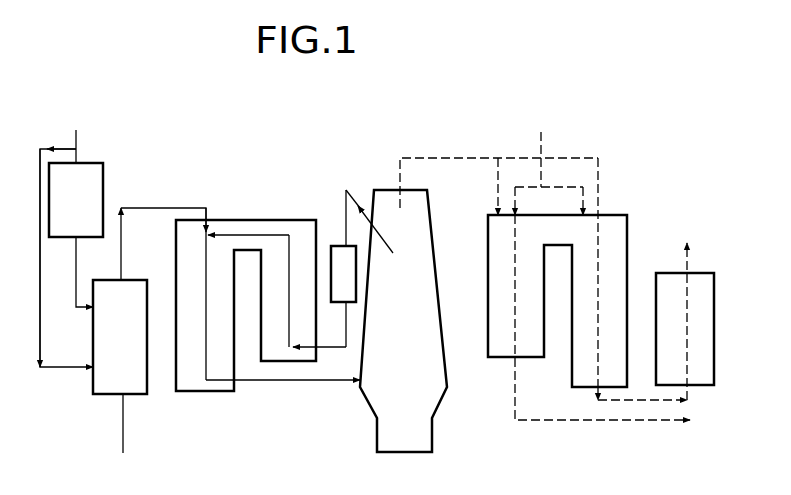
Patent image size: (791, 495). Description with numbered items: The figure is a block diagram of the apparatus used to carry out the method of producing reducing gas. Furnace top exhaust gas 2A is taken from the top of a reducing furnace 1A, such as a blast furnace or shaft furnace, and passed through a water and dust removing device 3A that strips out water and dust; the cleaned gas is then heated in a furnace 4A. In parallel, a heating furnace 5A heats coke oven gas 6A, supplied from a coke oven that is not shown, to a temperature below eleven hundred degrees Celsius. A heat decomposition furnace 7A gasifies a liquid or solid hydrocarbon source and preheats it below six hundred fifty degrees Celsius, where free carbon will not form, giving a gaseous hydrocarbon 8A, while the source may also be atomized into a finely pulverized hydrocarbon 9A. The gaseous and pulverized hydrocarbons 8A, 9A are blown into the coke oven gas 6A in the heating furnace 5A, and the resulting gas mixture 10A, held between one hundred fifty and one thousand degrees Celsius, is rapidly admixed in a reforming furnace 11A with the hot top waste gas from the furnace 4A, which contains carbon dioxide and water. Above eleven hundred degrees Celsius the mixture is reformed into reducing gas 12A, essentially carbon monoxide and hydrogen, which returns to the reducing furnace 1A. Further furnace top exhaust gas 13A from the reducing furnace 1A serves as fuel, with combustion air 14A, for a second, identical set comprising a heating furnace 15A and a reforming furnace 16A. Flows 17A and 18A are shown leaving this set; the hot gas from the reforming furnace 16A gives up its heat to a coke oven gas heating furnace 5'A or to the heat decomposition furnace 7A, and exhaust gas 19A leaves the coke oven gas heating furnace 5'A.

The reducing furnace 1A is at (418, 337).
The furnace top exhaust gas 2A is at (384, 221).
The water and dust removing device 3A is at (355, 287).
The furnace 4A is at (313, 323).
The heating furnace 5A is at (136, 345).
The coke oven gas heating furnace 5'A is at (685, 329).
The coke oven gas 6A is at (124, 414).
The heat decomposition furnace 7A is at (83, 217).
The gaseous hydrocarbon 8A is at (75, 307).
The finely pulverized hydrocarbon 9A is at (75, 367).
The gas mixture 10A is at (152, 207).
The reforming furnace 11A is at (233, 327).
The reducing gas 12A is at (338, 382).
The furnace top exhaust gas 13A is at (403, 158).
The air 14A is at (546, 146).
The heating furnace 15A is at (520, 320).
The reforming furnace 16A is at (603, 320).
The bottoms line 17A is at (680, 420).
The outlet line 18A is at (687, 396).
The exhaust gas 19A is at (689, 264).